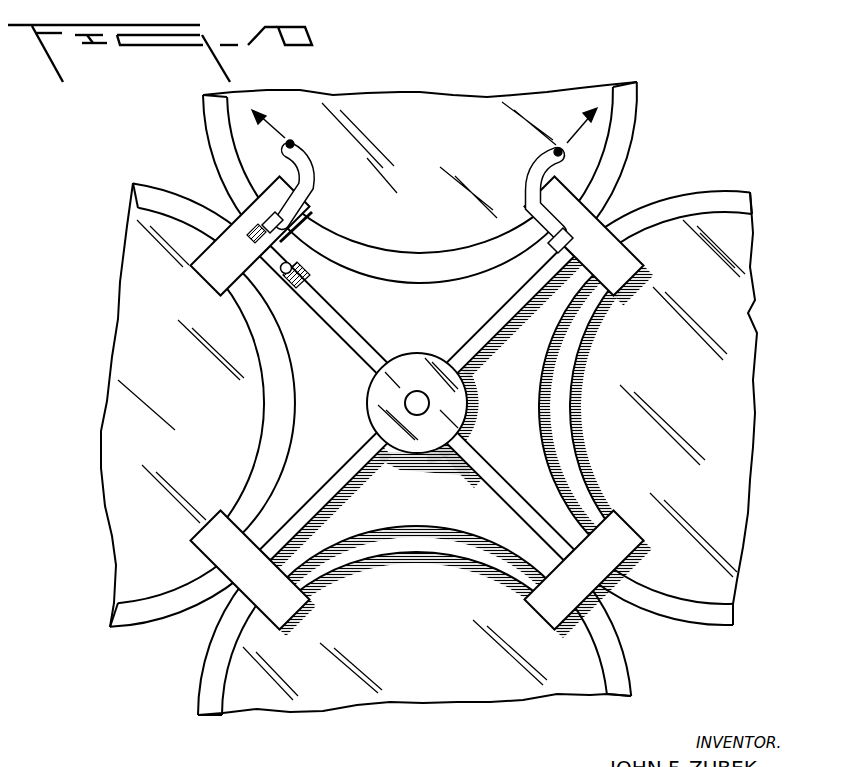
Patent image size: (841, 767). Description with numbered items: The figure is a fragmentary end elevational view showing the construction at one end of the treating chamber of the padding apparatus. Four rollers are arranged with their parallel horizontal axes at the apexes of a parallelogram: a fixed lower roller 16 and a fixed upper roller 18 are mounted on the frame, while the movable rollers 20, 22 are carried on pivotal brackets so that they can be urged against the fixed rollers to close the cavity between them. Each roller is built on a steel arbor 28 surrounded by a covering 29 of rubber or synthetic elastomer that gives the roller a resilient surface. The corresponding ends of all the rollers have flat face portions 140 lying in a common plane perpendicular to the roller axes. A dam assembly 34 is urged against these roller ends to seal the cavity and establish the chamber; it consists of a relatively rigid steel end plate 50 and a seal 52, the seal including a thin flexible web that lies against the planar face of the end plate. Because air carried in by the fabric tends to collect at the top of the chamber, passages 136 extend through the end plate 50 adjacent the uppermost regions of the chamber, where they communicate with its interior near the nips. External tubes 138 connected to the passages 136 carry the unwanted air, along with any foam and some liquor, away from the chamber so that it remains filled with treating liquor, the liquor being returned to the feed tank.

The lower roller 16 is at (384, 674).
The upper roller 18 is at (438, 103).
The movable roller 20 is at (748, 313).
The movable roller 22 is at (127, 360).
The steel arbor 28 is at (252, 703).
The covering of resilient material 29 is at (213, 682).
The dam assembly 34 is at (477, 340).
The end plate 50 is at (470, 527).
The seal 52 is at (592, 483).
The passages 136 is at (230, 288).
The external tubes 138 is at (315, 180).
The flat face portions 140 is at (457, 227).